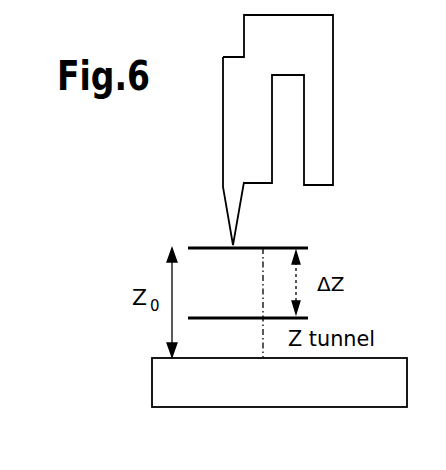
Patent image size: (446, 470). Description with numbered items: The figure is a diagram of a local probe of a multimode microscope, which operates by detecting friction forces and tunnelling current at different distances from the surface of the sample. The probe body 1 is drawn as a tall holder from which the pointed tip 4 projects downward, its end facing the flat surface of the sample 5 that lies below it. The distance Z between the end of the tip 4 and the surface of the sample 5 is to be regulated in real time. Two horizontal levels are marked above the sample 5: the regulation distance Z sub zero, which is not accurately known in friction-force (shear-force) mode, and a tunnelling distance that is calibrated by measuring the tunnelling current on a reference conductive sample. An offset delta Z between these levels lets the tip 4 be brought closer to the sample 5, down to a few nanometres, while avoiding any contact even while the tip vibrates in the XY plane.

The probe holder / scanning probe body 1 is at (333, 40).
The tip 4 is at (223, 212).
The sample 5 is at (152, 381).